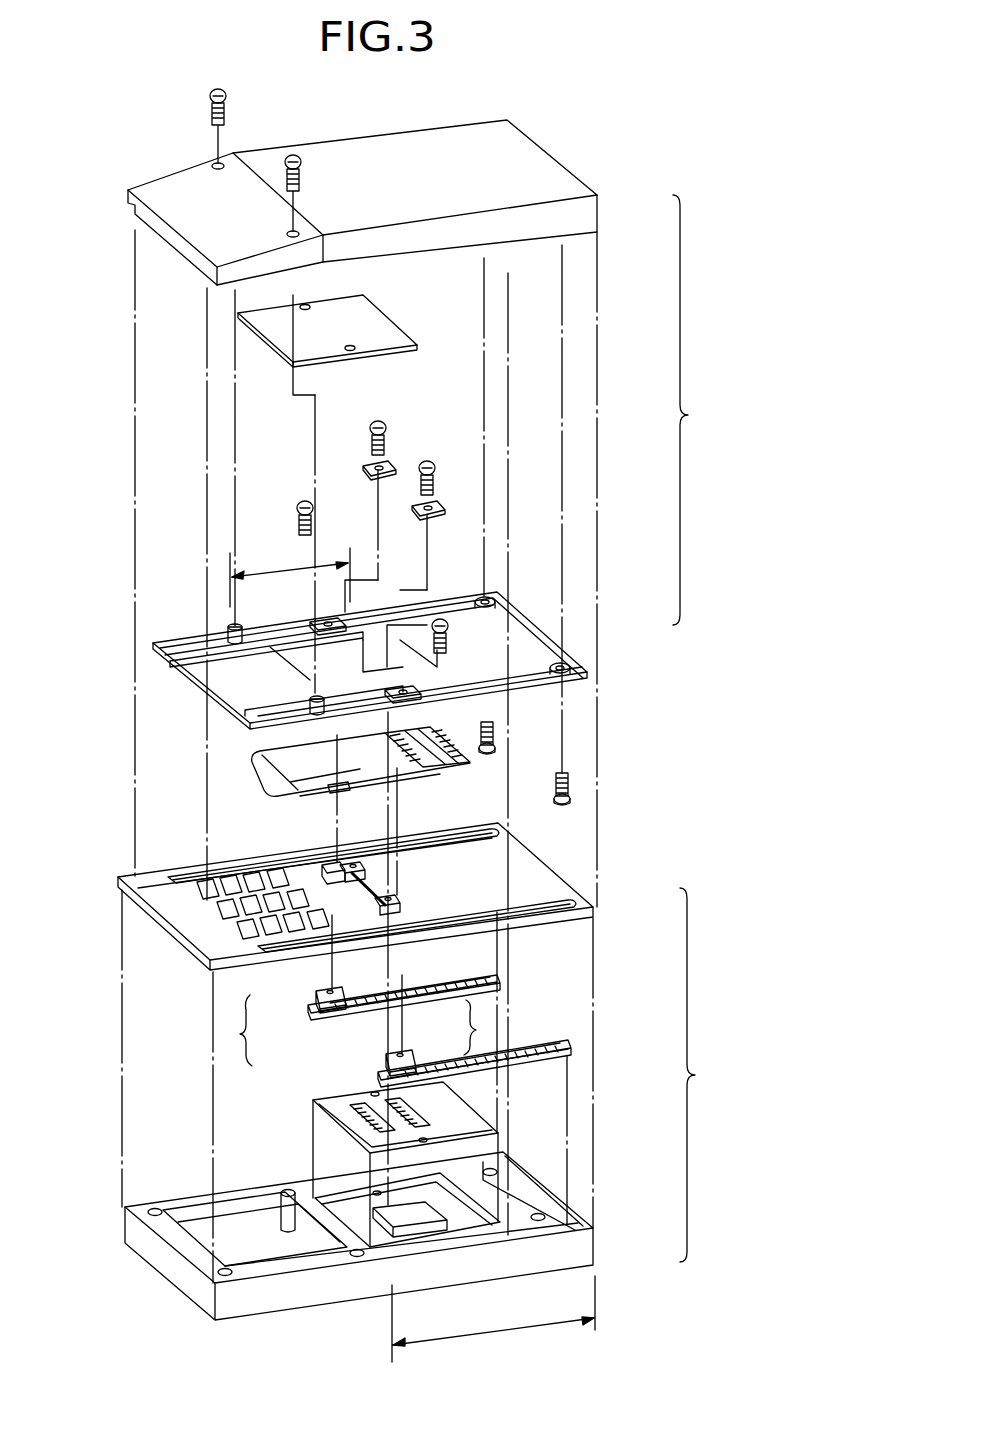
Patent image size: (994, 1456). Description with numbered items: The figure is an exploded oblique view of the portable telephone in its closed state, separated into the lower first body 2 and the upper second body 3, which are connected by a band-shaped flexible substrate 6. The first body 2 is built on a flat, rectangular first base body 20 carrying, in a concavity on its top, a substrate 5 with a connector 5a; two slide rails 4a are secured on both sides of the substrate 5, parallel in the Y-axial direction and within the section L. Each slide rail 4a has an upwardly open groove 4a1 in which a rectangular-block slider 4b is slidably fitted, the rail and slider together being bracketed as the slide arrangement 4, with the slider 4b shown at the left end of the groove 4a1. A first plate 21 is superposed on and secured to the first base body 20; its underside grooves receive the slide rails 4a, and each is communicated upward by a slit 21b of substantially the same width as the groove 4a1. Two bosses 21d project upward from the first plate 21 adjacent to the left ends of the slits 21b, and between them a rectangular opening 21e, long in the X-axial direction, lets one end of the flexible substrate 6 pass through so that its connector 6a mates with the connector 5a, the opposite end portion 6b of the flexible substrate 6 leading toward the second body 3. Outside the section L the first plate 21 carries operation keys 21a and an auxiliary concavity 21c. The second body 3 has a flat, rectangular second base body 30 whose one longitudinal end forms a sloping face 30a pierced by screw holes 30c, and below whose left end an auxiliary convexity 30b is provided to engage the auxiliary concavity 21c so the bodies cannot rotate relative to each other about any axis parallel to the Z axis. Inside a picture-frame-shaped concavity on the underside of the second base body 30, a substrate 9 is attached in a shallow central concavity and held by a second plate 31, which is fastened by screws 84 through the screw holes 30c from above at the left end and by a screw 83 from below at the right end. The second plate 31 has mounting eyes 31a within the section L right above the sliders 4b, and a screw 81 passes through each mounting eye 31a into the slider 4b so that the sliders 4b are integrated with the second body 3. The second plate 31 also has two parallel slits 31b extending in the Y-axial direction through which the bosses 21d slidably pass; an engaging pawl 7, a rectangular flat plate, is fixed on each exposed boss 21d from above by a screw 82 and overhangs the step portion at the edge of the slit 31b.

The first body 2 is at (700, 1075).
The second body 3 is at (694, 410).
The rail assembly 4 is at (359, 1030).
The slide rail 4a is at (363, 1010).
The groove 4a1 is at (453, 986).
The slider 4b is at (316, 1000).
The substrate 5 is at (462, 1105).
The connector 5a is at (355, 1116).
The flexible substrate 6 is at (282, 768).
The connector 6a is at (342, 793).
The cable connector 6b is at (462, 765).
The engaging pawl 7 is at (368, 468).
The substrate 9 is at (375, 312).
The first base body 20 is at (585, 1248).
The first plate 21 is at (600, 908).
The operation keys 21a is at (200, 878).
The slit 21b is at (505, 834).
The auxiliary concavity 21c is at (178, 906).
The boss 21d is at (362, 868).
The rectangular opening 21e is at (330, 868).
The second base body 30 is at (585, 212).
The sloping face 30a is at (165, 183).
The auxiliary convexity 30b is at (155, 249).
The screw holes 30c is at (208, 160).
The second plate 31 is at (543, 632).
The mounting eye 31a is at (318, 632).
The slit 31b is at (310, 708).
The screw 81 is at (297, 508).
The screw 82 is at (385, 424).
The screw 83 is at (487, 757).
The screws 84 is at (228, 97).
The section L is at (412, 955).